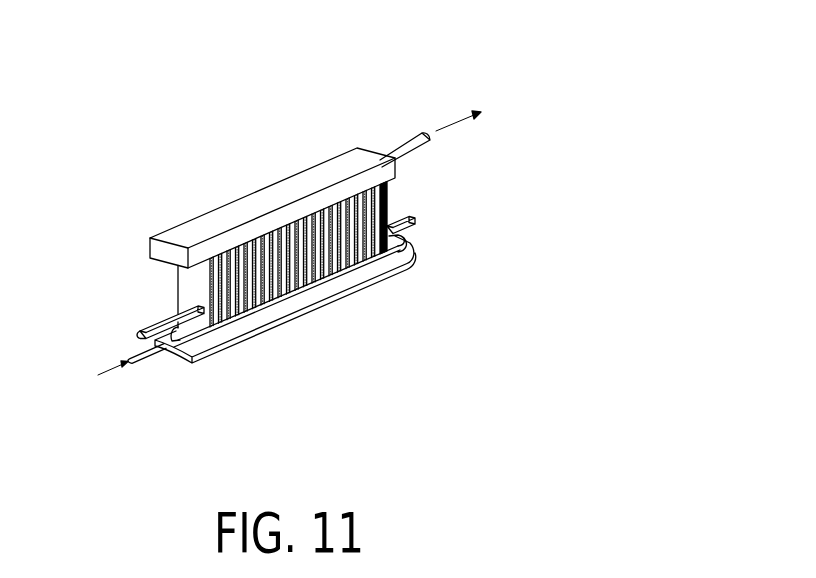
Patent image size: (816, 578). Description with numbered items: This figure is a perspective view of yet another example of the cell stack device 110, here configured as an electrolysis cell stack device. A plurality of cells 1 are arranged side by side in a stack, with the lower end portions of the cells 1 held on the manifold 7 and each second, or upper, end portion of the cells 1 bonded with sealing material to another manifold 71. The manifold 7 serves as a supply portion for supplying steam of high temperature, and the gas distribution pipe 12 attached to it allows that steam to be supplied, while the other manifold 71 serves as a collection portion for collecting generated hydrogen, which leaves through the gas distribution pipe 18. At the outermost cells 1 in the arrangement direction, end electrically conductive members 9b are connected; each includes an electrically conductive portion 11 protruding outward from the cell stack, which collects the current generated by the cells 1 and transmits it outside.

The cell stack device 110 is at (223, 115).
The gas distribution pipe 18 is at (412, 133).
The manifold 71 is at (180, 236).
The cell 1 is at (376, 208).
The end electrically conductive member 9b is at (182, 284).
The electrically conductive portion 11 is at (138, 333).
The gas distribution pipe 12 is at (145, 358).
The manifold 7 is at (192, 352).